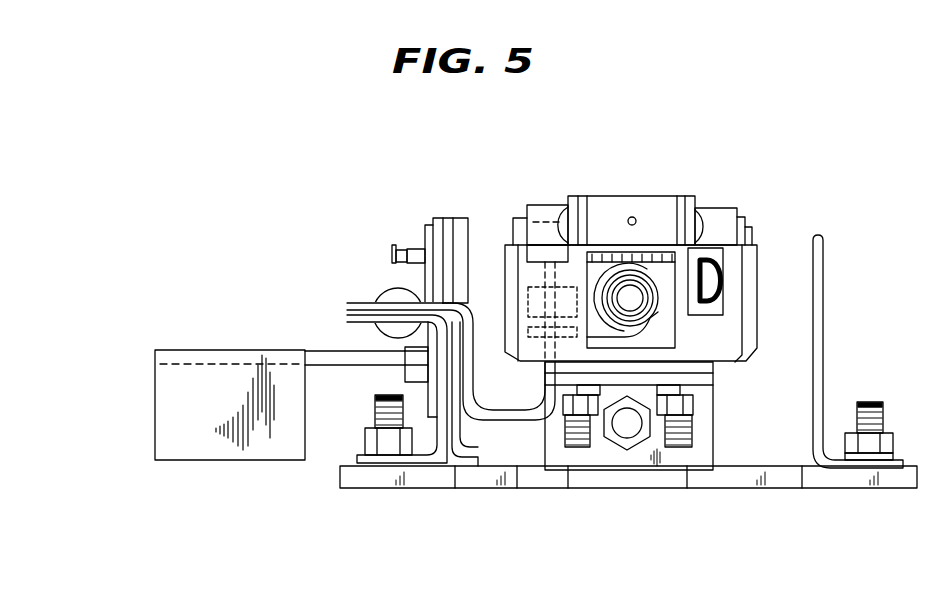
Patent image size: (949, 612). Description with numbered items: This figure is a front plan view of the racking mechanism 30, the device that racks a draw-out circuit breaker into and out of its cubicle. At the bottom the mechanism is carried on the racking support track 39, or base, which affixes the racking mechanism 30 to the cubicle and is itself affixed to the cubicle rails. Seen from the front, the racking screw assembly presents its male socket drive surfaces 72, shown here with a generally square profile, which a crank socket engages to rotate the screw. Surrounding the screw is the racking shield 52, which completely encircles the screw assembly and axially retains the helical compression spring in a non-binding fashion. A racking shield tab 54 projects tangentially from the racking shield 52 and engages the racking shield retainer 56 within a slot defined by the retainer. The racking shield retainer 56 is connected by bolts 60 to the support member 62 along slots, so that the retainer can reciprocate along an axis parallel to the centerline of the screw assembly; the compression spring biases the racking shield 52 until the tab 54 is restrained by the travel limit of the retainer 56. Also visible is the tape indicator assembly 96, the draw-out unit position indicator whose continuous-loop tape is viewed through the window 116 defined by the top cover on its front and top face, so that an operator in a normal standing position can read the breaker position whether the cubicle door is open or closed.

The racking mechanism 30 is at (634, 233).
The racking shield 52 is at (610, 270).
The window 116 is at (724, 258).
The tape indicator assembly 96 is at (723, 302).
The male socket drive surfaces 72 is at (658, 312).
The racking shield tab 54 is at (540, 371).
The bolts 60 is at (405, 373).
The support member 62 is at (478, 466).
The racking shield retainer 56 is at (515, 423).
The racking support track 39 is at (664, 506).